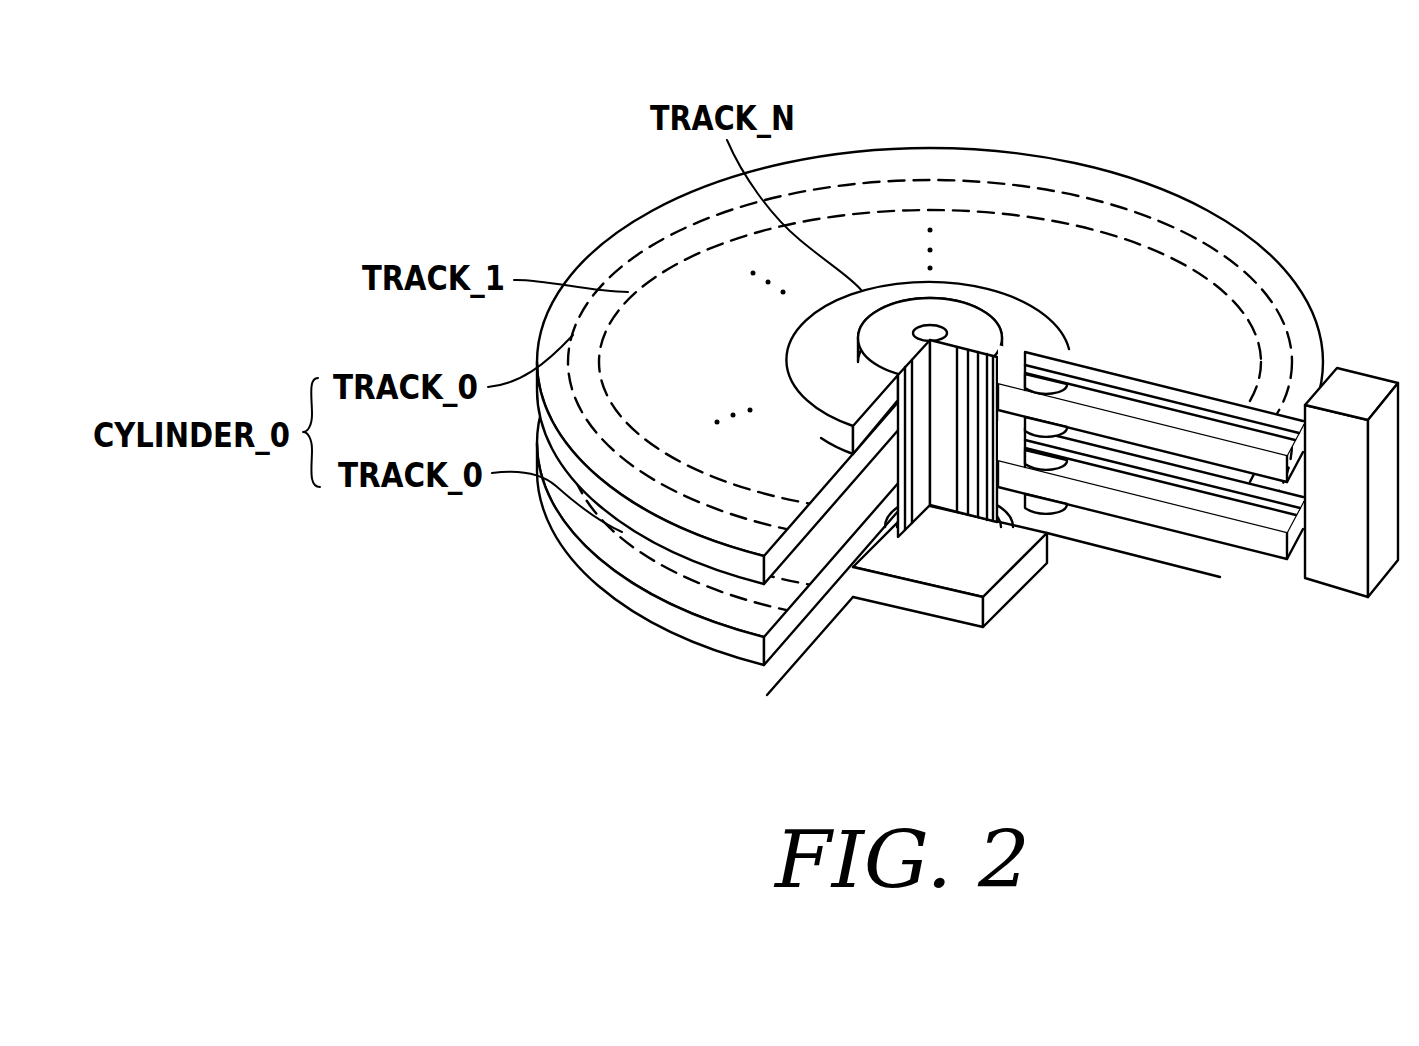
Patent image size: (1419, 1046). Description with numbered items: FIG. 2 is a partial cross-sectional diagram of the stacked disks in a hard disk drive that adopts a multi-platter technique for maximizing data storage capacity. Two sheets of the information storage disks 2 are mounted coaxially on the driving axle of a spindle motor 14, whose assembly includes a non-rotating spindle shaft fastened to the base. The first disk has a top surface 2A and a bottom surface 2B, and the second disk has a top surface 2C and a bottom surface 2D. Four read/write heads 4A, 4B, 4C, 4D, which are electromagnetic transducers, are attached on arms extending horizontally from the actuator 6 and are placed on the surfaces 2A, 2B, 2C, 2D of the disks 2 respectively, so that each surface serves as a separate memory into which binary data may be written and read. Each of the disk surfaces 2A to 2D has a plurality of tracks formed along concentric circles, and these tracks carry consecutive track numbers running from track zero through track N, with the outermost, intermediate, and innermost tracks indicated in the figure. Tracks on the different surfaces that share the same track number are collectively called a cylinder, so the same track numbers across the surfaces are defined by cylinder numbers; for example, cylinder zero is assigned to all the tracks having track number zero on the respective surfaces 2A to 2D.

The information storage disks 2 is at (1205, 207).
The top surface of first storage disk 2A is at (852, 492).
The bottom surface of first storage disk 2B is at (858, 475).
The top surface of second storage disk 2C is at (864, 561).
The bottom surface of second storage disk 2D is at (866, 530).
The read/write head 4A is at (1040, 376).
The read/write head 4B is at (1042, 418).
The read/write head 4C is at (1062, 462).
The read/write head 4D is at (1055, 500).
The actuator 6 is at (1337, 567).
The spindle motor 14 is at (951, 610).